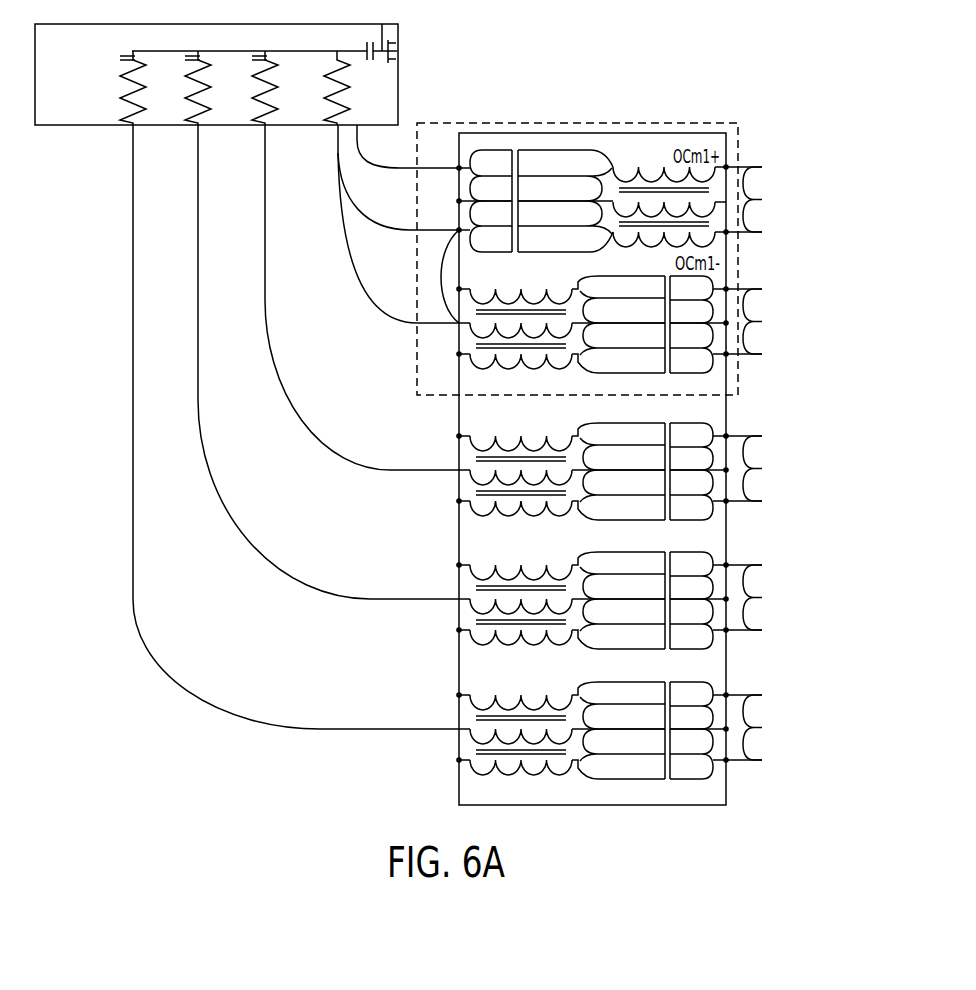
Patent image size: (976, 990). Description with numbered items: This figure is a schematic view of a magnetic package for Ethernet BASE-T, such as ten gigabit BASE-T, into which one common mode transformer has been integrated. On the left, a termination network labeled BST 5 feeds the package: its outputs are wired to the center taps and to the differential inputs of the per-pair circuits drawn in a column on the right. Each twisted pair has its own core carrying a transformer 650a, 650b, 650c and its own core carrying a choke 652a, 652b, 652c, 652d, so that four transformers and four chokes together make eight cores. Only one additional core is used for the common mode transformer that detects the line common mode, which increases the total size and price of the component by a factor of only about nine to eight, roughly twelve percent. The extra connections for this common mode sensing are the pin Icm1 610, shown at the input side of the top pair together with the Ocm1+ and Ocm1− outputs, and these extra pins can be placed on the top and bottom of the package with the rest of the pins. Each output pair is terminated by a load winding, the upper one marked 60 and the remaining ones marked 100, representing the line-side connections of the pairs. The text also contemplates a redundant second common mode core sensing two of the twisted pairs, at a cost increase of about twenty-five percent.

The BST transmitter termination network 5 is at (216, 74).
The Icm1 pin 610 is at (443, 158).
The transformer 650a is at (584, 160).
The transformer 650b is at (600, 423).
The transformer 650c is at (600, 552).
The choke 652a is at (510, 367).
The choke 652b is at (510, 514).
The choke 652c is at (510, 643).
The choke 652d is at (510, 773).
The load winding 60 is at (777, 199).
The load winding 100 is at (776, 322).